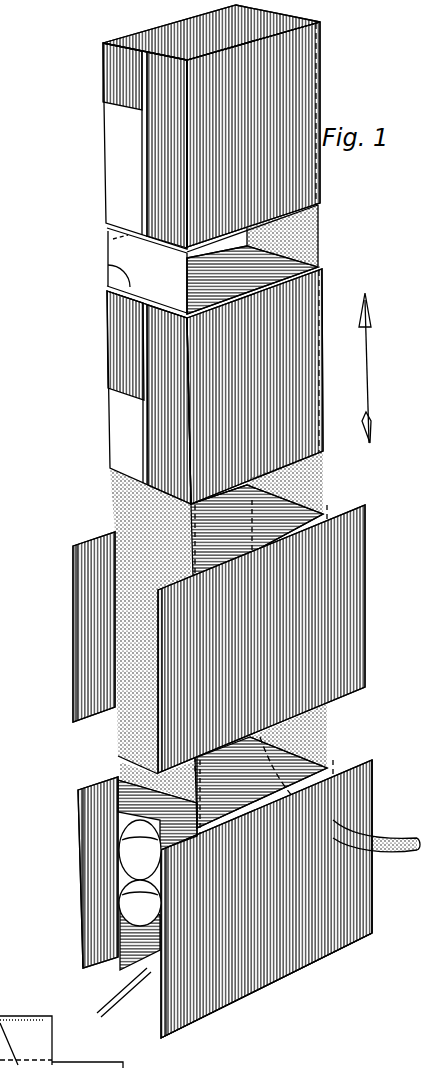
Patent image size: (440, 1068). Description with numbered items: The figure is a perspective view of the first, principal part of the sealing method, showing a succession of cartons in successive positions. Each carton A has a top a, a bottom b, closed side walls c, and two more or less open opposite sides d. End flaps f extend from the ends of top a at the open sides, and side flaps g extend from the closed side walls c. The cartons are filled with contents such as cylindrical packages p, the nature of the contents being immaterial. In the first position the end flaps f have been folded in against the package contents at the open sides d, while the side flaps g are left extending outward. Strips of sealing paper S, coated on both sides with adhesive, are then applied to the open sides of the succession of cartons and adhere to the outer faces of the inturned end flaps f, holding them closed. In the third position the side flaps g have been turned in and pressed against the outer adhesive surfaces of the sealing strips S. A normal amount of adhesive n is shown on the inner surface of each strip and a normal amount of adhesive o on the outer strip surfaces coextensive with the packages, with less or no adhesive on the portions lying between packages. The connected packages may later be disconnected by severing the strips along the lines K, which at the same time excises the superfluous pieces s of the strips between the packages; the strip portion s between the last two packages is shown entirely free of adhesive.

The top a is at (215, 416).
The side flaps g is at (107, 158).
The severing lines K is at (107, 267).
The sealing paper strips S is at (318, 237).
The superfluous strip pieces s is at (140, 283).
The outer adhesive o is at (127, 633).
The carton A is at (291, 618).
The open sides d is at (224, 873).
The end flaps f is at (122, 814).
The cylindrical packages p is at (133, 897).
The inner adhesive n is at (375, 870).
The bottom b is at (243, 1003).
The closed side walls c is at (285, 943).